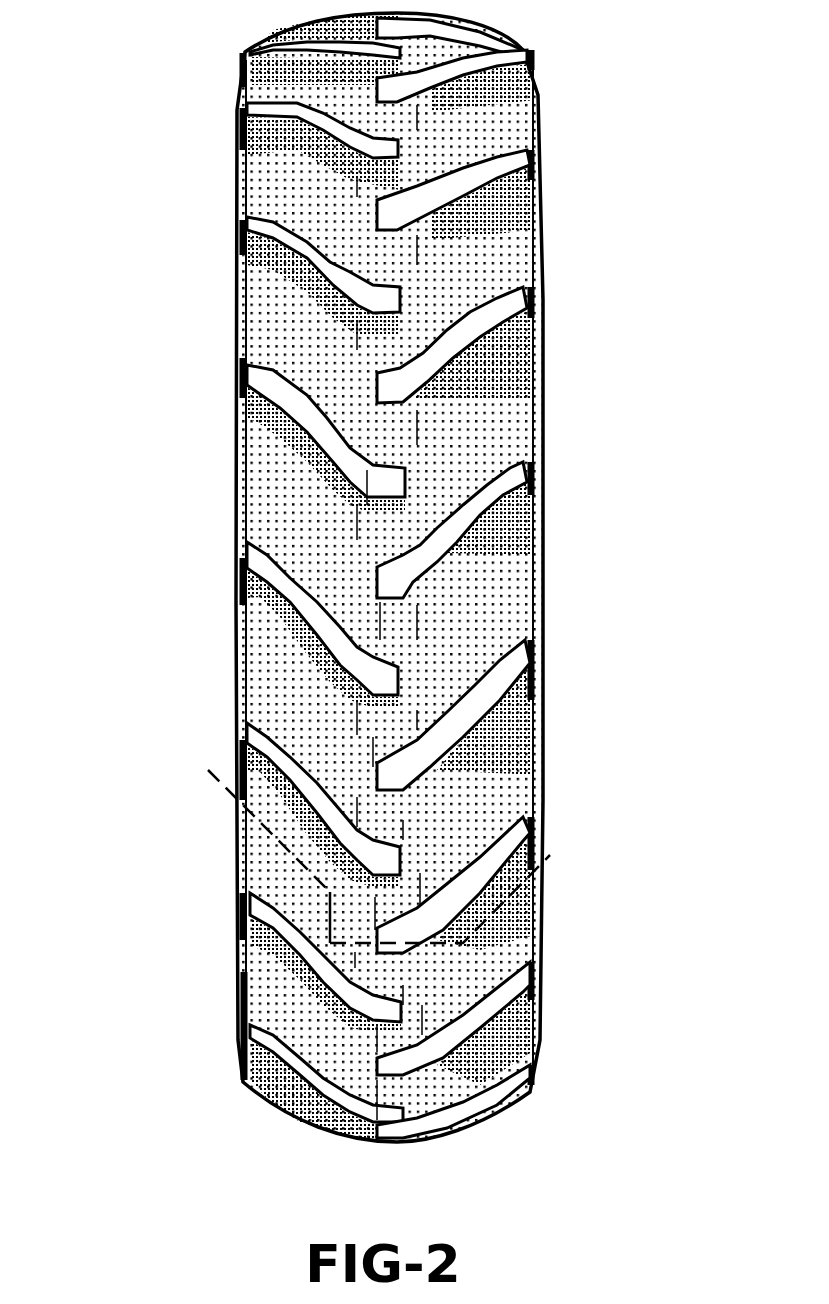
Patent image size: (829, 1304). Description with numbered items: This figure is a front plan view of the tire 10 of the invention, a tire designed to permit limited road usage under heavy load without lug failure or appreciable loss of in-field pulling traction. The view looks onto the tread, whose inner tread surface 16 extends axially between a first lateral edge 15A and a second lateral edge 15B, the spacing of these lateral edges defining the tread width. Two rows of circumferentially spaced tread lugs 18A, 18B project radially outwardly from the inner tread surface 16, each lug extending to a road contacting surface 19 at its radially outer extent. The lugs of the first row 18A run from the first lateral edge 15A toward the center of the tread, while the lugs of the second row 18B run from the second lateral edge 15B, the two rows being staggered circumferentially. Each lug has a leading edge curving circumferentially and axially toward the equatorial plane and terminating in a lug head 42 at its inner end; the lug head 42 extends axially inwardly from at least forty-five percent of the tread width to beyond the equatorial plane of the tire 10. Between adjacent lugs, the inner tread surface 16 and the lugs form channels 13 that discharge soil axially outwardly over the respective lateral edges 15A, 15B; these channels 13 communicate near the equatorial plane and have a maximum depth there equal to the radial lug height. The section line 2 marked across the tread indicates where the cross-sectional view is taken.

The tire 10 is at (138, 591).
The channels 13 is at (470, 273).
The first lateral edge 15A is at (540, 692).
The second lateral edge 15B is at (238, 845).
The inner tread surface 16 is at (268, 647).
The tread lugs of first row 18A is at (500, 463).
The tread lugs of second row 18B is at (298, 436).
The road contacting surfaces 19 is at (265, 388).
The lug head 42 is at (378, 487).
The section line 2 is at (208, 770).